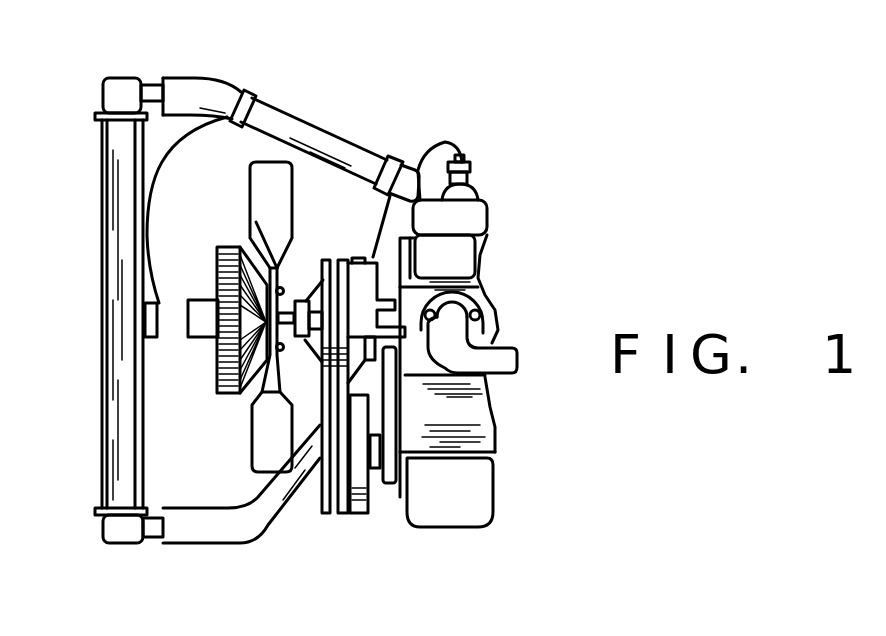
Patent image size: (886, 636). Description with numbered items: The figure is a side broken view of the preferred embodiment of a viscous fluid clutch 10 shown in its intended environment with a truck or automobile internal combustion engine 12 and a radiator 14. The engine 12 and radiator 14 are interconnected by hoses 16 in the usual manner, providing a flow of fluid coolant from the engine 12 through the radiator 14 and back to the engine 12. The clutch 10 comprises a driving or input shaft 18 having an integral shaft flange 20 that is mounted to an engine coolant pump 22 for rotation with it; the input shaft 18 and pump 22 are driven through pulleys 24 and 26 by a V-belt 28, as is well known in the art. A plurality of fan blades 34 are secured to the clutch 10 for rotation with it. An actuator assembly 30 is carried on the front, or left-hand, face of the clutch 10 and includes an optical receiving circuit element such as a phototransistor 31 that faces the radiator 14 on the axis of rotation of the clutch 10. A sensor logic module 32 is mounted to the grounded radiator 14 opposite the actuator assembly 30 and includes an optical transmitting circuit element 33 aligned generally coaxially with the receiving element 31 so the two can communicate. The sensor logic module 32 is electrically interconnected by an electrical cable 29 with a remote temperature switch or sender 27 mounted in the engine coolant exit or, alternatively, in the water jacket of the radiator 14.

The viscous fluid clutch 10 is at (210, 395).
The internal combustion engine 12 is at (472, 413).
The radiator 14 is at (110, 384).
The hoses 16 is at (219, 94).
The input shaft 18 is at (289, 290).
The shaft flange 20 is at (280, 387).
The engine coolant pump 22 is at (398, 160).
The pulley 24 is at (330, 258).
The pulley 26 is at (327, 514).
The V-belt 28 is at (340, 515).
The remote temperature switch or sender 27 is at (476, 166).
The electrical cable 29 is at (150, 206).
The actuator assembly 30 is at (205, 337).
The phototransistor 31 is at (186, 300).
The sensor logic module 32 is at (145, 322).
The optical transmitting circuit element 33 is at (159, 303).
The fan blades 34 is at (278, 185).